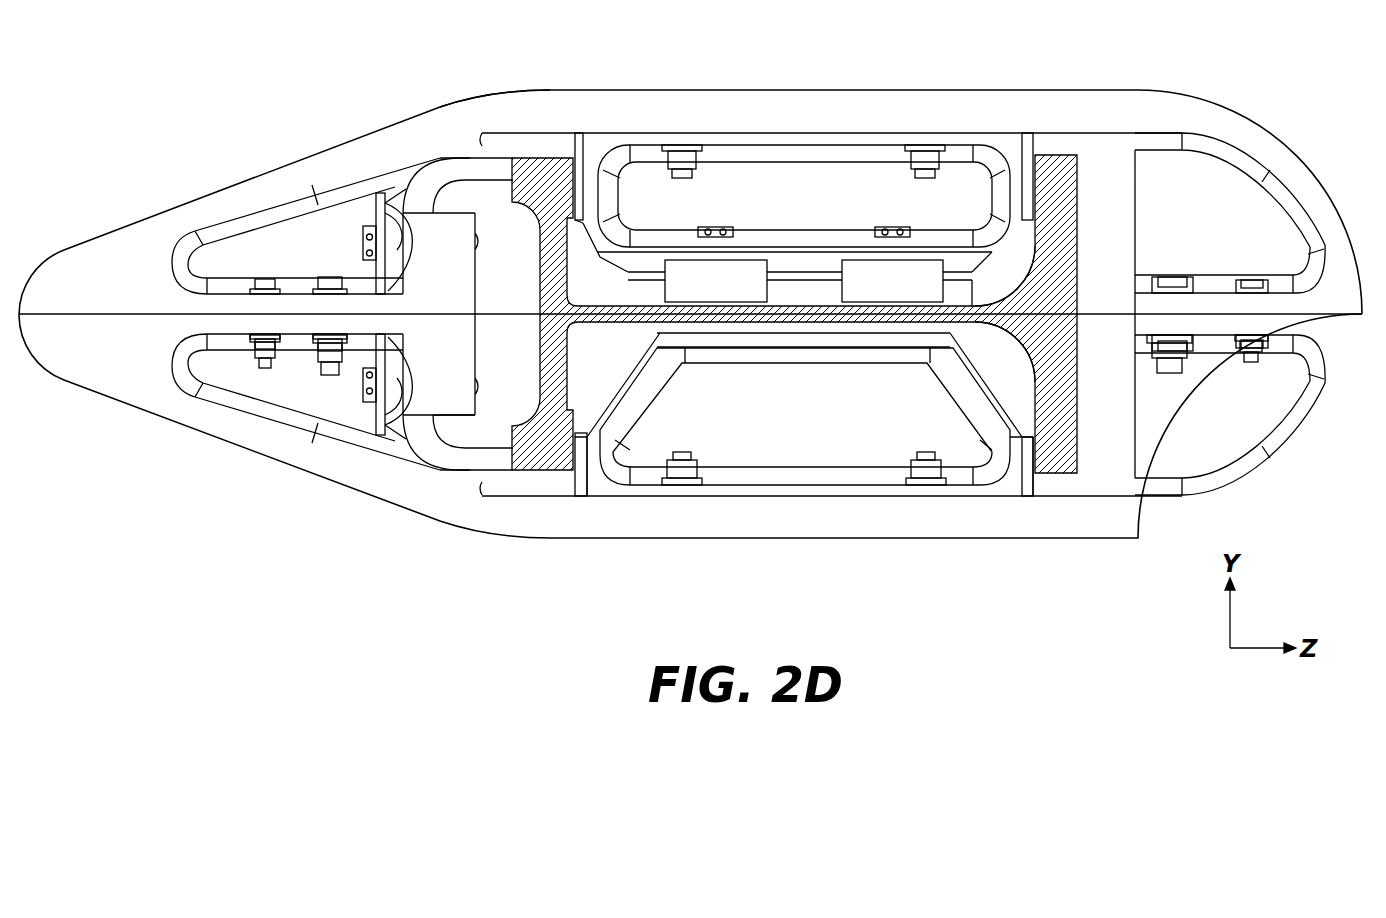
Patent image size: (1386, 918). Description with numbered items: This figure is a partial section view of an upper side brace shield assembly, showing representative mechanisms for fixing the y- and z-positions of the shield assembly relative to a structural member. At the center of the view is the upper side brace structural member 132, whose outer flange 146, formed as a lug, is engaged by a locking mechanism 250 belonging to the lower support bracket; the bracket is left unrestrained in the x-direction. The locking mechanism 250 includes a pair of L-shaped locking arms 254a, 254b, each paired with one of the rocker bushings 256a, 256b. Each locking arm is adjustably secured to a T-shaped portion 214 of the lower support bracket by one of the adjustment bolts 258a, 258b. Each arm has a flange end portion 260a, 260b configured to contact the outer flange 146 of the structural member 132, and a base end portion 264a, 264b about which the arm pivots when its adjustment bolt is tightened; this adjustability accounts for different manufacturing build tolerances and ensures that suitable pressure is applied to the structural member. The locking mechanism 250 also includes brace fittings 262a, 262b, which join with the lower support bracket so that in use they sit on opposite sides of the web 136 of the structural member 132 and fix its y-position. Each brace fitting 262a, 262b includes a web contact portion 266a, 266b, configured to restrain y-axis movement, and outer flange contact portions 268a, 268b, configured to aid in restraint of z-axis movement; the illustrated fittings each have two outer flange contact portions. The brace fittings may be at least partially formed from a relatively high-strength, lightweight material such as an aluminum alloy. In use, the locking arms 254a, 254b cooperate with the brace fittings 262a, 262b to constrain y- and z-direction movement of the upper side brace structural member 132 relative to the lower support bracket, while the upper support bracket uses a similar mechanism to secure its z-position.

The upper side brace structural member 132 is at (1010, 312).
The web 136 is at (958, 318).
The outer flange 146 is at (552, 253).
The T-shaped portion 214 is at (452, 305).
The locking mechanism 250 is at (453, 108).
The L-shaped locking arm 254a is at (432, 183).
The L-shaped locking arm 254b is at (433, 452).
The rocker bushing 256a is at (353, 217).
The rocker bushing 256b is at (333, 405).
The adjustment bolt 258a is at (363, 243).
The adjustment bolt 258b is at (330, 393).
The flange end portion 260a is at (470, 158).
The flange end portion 260b is at (500, 463).
The brace fitting 262a is at (823, 237).
The brace fitting 262b is at (817, 353).
The base end portion 264a is at (397, 218).
The base end portion 264b is at (400, 413).
The web contact portion 266a is at (740, 273).
The web contact portion 266b is at (720, 327).
The outer flange contact portion 268a is at (582, 140).
The outer flange contact portion 268b is at (578, 473).